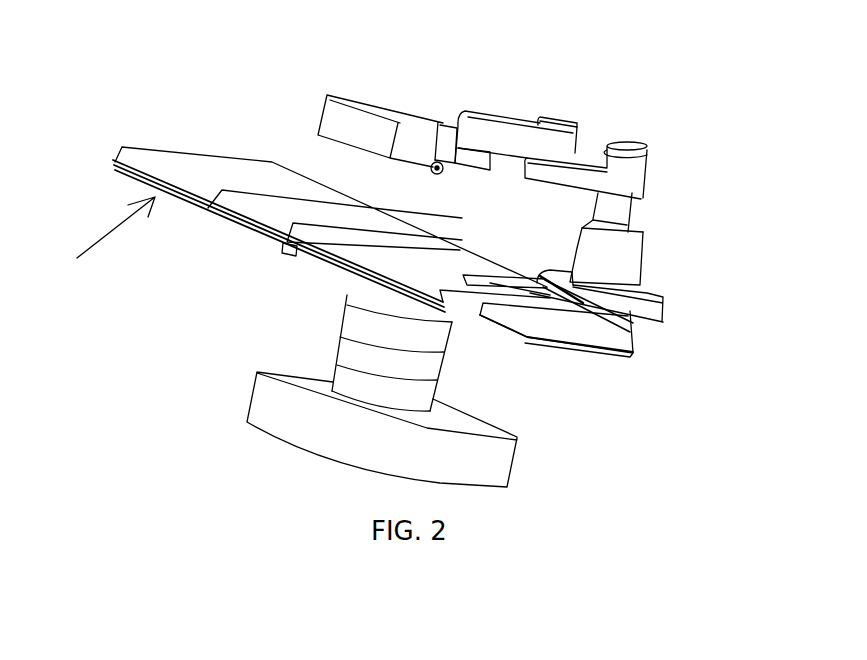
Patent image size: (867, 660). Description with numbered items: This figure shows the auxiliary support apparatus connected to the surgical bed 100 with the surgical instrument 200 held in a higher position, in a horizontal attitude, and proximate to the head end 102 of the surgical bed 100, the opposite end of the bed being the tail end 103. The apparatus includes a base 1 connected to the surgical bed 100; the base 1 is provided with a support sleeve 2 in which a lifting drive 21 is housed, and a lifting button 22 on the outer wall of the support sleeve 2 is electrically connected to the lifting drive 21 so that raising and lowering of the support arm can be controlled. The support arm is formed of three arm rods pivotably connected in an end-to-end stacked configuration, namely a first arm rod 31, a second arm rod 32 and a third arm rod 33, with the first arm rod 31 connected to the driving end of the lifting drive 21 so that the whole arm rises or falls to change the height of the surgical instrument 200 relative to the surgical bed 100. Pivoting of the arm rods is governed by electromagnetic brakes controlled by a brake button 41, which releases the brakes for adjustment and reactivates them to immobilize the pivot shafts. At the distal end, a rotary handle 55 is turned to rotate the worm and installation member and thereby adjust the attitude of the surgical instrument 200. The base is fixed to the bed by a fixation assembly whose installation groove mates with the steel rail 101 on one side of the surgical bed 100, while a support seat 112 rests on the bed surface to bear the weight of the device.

The surgical bed 100 is at (105, 242).
The steel rail 101 is at (255, 225).
The head end 102 is at (218, 166).
The tail end 103 is at (558, 327).
The support seat 112 is at (633, 323).
The surgical instrument 200 is at (368, 100).
The base 1 is at (637, 308).
The support sleeve 2 is at (605, 260).
The lifting drive 21 is at (618, 210).
The lifting button 22 is at (628, 230).
The first arm rod 31 is at (580, 171).
The second arm rod 32 is at (503, 132).
The third arm rod 33 is at (450, 138).
The brake button 41 is at (520, 123).
The rotary handle 55 is at (445, 175).